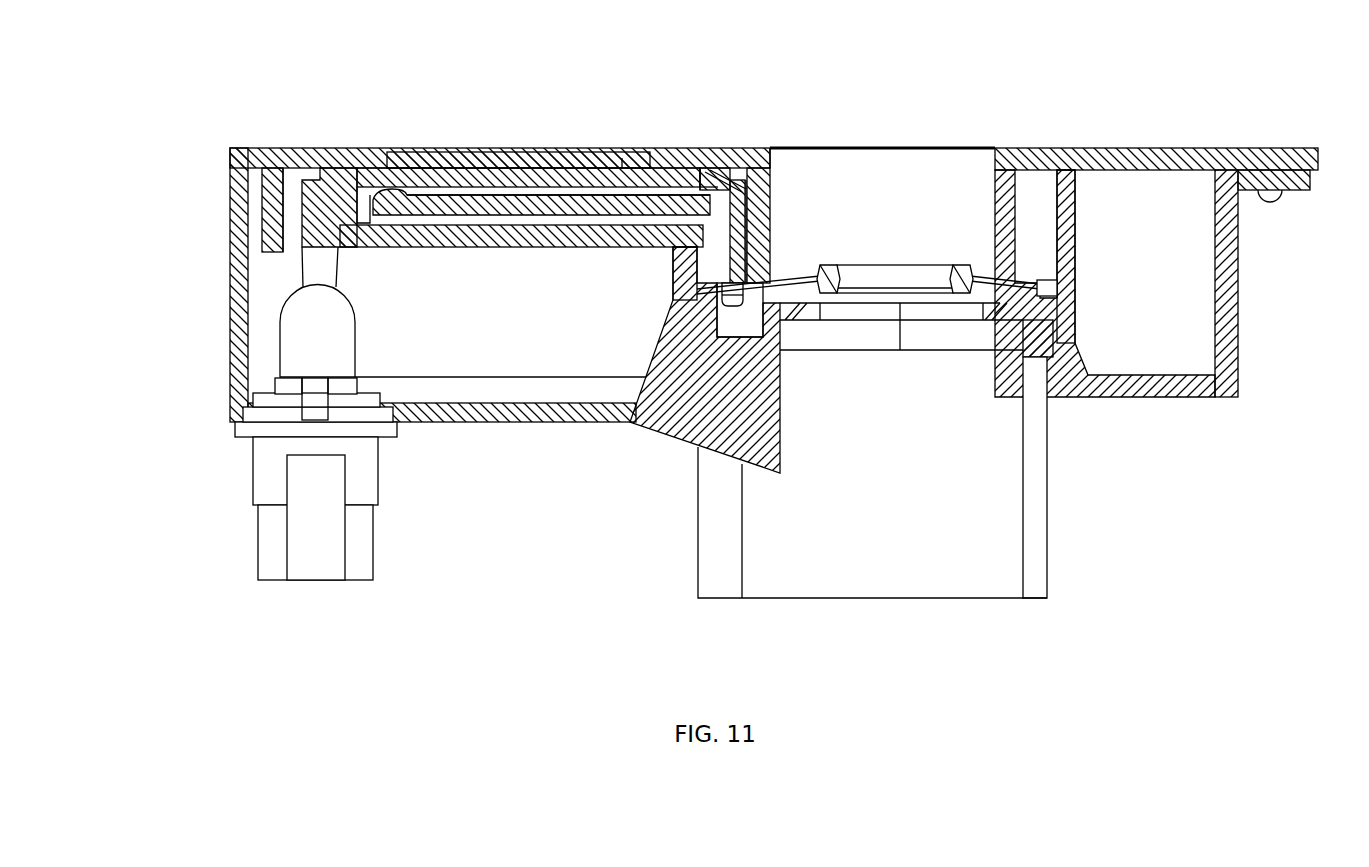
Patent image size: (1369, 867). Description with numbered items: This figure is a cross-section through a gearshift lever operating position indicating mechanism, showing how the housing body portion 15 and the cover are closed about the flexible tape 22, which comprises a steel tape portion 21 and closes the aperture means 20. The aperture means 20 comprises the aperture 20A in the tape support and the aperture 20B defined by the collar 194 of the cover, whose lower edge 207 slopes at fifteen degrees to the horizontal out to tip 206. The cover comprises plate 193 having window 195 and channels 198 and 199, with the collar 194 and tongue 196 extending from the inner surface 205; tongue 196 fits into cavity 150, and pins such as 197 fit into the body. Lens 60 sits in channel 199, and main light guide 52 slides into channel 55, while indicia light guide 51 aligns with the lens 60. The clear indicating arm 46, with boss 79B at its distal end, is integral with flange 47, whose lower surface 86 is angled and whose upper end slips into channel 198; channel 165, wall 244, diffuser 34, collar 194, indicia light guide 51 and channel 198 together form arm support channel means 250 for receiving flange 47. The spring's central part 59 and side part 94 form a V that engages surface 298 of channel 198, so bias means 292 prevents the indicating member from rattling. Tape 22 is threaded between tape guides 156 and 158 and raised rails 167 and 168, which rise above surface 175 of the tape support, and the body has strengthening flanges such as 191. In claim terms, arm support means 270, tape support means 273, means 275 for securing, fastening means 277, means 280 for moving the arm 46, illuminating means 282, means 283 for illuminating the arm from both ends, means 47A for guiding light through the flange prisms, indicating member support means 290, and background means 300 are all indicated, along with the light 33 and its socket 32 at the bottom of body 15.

The cavity 150 is at (260, 320).
The lens 60 is at (455, 152).
The window 195 is at (556, 152).
The channel 199 is at (622, 160).
The means for illuminating elongated member from both ends 283 is at (808, 147).
The tongue 196 is at (292, 165).
The indicia light guide 51 is at (372, 178).
The background means 300 is at (297, 213).
The main light guide 52 is at (318, 269).
The channel 55 is at (345, 270).
The boss 79B is at (400, 215).
The indicating arm 46 is at (507, 207).
The diffuser 34 is at (563, 236).
The channel 198 is at (725, 170).
The side part 94 is at (732, 170).
The central part 59 is at (703, 162).
The surface 298 is at (702, 168).
The bias means 292 is at (765, 145).
The means for guiding light 47A is at (773, 147).
The aperture means 20 is at (928, 170).
The flange 47 is at (742, 248).
The arm support channel means 250 is at (740, 236).
The collar 194 is at (760, 196).
The arm support means 270 is at (637, 463).
The wall 244 is at (680, 277).
The channel 165 is at (740, 323).
The tape guide 158 is at (697, 289).
The raised rail 168 is at (673, 330).
The lower surface 86 is at (722, 297).
The flange 191 is at (757, 437).
The aperture 20A is at (899, 310).
The aperture 20B is at (985, 277).
The lower edge 207 is at (787, 323).
The surface 175 is at (985, 322).
The indicating member support means 290 is at (857, 443).
The means for moving the indicating arm 280 is at (903, 430).
The body portion 15 is at (1213, 384).
The plate 193 is at (1060, 148).
The pin 197 is at (1272, 196).
The tip 206 is at (1017, 278).
The inner surface 205 is at (1165, 170).
The tape guide 156 is at (1042, 288).
The raised rail 167 is at (1050, 306).
The tape support means 273 is at (1077, 347).
The means for securing 275 is at (1250, 286).
The fastening means 277 is at (1250, 318).
The steel tape portion 21 is at (1037, 567).
The flexible tape 22 is at (963, 587).
The lamp 33 is at (300, 347).
The socket 32 is at (357, 567).
The illuminating means 282 is at (241, 588).